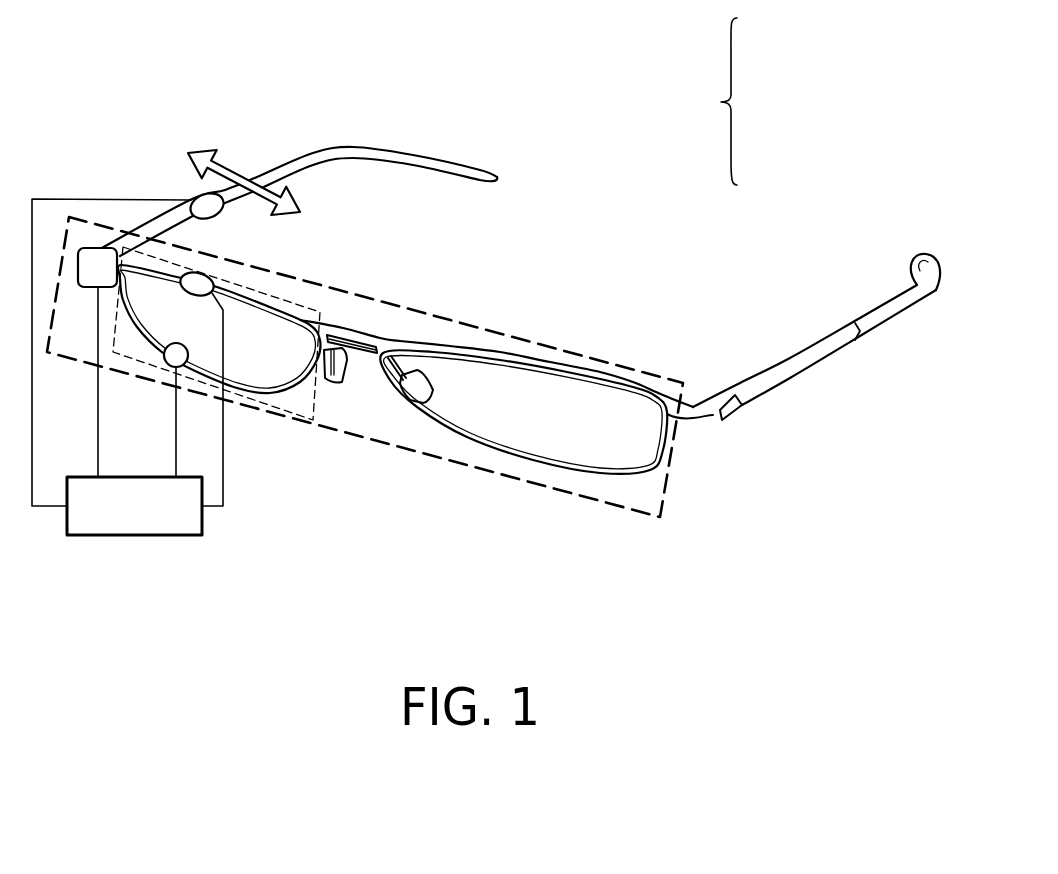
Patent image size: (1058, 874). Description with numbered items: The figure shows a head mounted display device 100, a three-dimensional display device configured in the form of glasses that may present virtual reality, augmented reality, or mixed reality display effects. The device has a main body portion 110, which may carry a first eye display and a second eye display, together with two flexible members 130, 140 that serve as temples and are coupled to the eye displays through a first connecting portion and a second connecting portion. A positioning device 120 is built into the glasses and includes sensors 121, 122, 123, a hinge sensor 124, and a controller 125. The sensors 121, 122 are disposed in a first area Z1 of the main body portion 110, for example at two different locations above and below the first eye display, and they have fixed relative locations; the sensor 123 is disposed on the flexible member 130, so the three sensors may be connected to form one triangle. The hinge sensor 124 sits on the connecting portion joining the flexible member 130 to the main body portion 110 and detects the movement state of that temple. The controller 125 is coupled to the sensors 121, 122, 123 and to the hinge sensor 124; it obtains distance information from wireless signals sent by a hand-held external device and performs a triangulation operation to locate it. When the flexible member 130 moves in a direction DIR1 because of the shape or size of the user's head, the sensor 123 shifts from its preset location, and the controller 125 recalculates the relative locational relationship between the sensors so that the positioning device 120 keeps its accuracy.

The head mounted display device 100 is at (486, 307).
The main body portion 110 is at (380, 367).
The positioning device 120 is at (729, 104).
The sensor 121 is at (181, 290).
The sensor 122 is at (183, 326).
The sensor 123 is at (226, 214).
The hinge sensor 124 is at (93, 247).
The controller 125 is at (205, 520).
The flexible member 130 is at (306, 170).
The flexible member 140 is at (820, 338).
The first area Z1 is at (321, 310).
The direction DIR1 is at (238, 165).